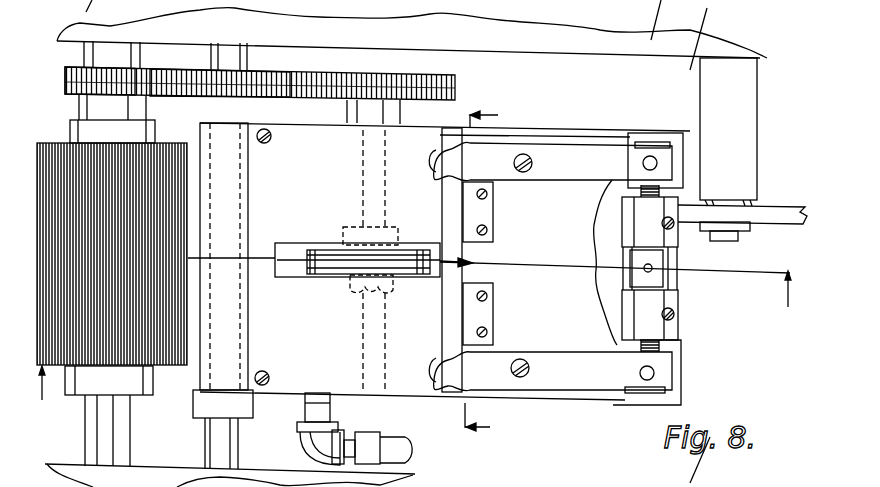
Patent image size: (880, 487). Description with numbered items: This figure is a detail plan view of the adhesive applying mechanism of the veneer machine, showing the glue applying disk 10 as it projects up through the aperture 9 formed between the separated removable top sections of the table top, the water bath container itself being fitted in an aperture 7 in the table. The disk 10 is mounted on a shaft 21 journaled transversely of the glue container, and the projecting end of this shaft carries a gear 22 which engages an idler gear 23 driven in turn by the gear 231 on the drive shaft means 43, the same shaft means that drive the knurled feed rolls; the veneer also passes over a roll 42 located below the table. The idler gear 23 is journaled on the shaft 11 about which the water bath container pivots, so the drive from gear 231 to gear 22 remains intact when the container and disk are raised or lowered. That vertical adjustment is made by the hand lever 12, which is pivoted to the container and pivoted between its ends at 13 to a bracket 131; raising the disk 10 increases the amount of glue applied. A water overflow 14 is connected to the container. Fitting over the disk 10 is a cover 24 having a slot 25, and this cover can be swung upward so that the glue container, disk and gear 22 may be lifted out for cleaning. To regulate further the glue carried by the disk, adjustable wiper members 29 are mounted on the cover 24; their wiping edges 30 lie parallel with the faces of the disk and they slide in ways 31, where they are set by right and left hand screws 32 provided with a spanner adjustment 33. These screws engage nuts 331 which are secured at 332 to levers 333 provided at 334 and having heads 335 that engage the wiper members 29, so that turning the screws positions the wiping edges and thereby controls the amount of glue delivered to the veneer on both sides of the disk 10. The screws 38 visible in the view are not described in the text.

The aperture 7 is at (419, 337).
The aperture 9 is at (491, 272).
The glue applying disk 10 is at (300, 262).
The shaft 11 is at (215, 425).
The hand lever 12 is at (780, 213).
The pivot 13 is at (723, 235).
The water overflow 14 is at (323, 415).
The shaft 21 is at (360, 312).
The gear 22 is at (452, 90).
The idler gear 23 is at (258, 72).
The gear 231 is at (140, 68).
The cover 24 is at (578, 393).
The slot 25 is at (297, 248).
The wiper members 29 is at (450, 220).
The wiping edges 30 is at (473, 265).
The ways 31 is at (485, 205).
The right and left hand screws 32 is at (647, 213).
The spanner adjustment 33 is at (662, 283).
The screw 38 is at (272, 138).
The roll 42 is at (62, 142).
The drive shaft means 43 is at (97, 405).
The bracket 131 is at (747, 133).
The nuts 331 is at (662, 140).
The securing point 332 is at (652, 157).
The levers 333 is at (573, 155).
The pivot 334 is at (527, 155).
The heads 335 is at (437, 160).